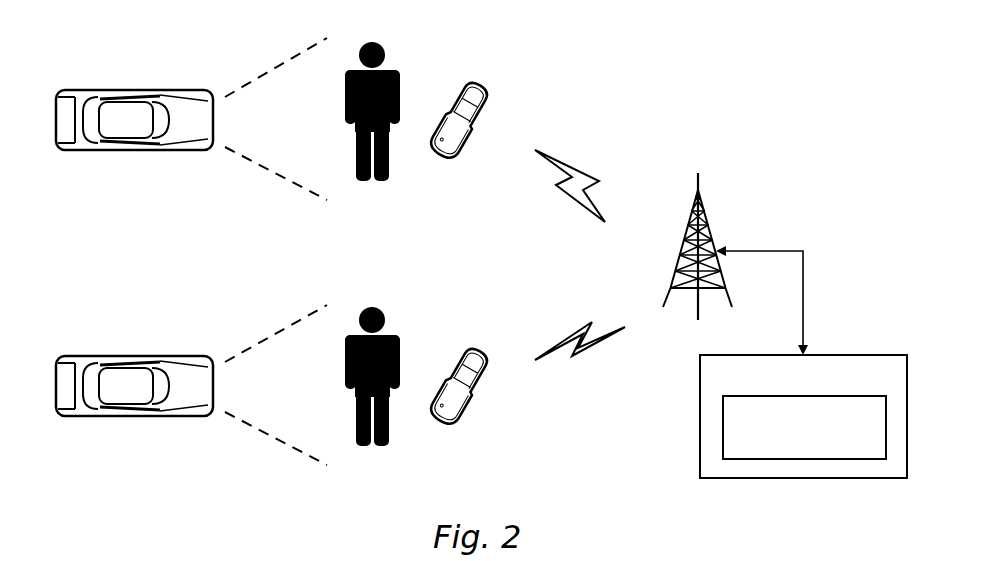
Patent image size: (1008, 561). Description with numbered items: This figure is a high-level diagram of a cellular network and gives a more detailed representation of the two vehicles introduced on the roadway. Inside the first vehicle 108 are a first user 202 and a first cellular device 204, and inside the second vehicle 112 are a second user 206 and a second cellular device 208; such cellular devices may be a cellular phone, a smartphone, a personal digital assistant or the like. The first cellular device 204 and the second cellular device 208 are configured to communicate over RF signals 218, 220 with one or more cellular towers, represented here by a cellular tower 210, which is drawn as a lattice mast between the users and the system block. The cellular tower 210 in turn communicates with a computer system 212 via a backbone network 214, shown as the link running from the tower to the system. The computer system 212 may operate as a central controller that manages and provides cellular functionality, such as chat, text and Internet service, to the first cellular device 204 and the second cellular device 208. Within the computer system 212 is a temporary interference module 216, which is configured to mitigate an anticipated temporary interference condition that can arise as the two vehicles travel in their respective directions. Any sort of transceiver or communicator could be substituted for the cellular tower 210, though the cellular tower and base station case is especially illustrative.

The first vehicle 108 is at (134, 132).
The second vehicle 112 is at (134, 398).
The first user 202 is at (372, 123).
The first cellular device 204 is at (460, 129).
The second user 206 is at (372, 388).
The second cellular device 208 is at (460, 395).
The cellular tower 210 is at (703, 217).
The computer system 212 is at (803, 416).
The backbone network 214 is at (777, 251).
The temporary interference module 216 is at (804, 427).
The RF signal 218 is at (556, 163).
The RF signal 220 is at (585, 350).